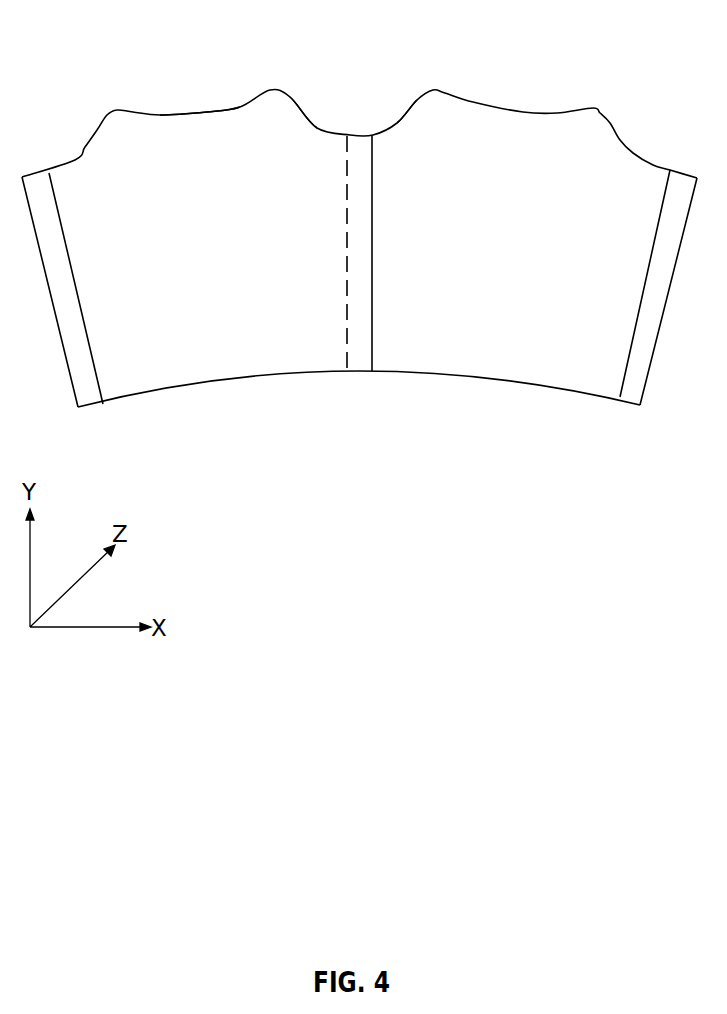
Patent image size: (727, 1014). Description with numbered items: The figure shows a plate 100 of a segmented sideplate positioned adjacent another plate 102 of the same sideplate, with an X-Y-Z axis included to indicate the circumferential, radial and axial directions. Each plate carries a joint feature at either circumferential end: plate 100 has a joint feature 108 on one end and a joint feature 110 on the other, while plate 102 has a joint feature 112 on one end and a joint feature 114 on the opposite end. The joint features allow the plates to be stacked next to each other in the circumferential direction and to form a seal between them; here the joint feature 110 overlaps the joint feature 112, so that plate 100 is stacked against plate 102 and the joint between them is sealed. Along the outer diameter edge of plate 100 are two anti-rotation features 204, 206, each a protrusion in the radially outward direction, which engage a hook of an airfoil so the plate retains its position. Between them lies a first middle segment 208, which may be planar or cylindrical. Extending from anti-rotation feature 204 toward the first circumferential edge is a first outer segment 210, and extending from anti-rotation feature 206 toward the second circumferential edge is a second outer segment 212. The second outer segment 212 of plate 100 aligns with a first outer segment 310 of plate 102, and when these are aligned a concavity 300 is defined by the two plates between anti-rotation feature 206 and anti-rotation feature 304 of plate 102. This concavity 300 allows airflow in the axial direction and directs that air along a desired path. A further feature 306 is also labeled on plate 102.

The plate 100 is at (250, 306).
The plate 102 is at (535, 305).
The joint feature 108 is at (90, 402).
The joint feature 110 is at (350, 352).
The joint feature 112 is at (355, 372).
The joint feature 114 is at (628, 403).
The anti-rotation feature 204 is at (133, 110).
The anti-rotation feature 206 is at (270, 90).
The first middle segment 208 is at (208, 112).
The first outer segment 210 is at (75, 160).
The second outer segment 212 is at (317, 128).
The concavity 300 is at (375, 123).
The anti-rotation feature 304 is at (435, 88).
The second shoulder edge 306 is at (595, 108).
The first outer segment 310 is at (397, 124).